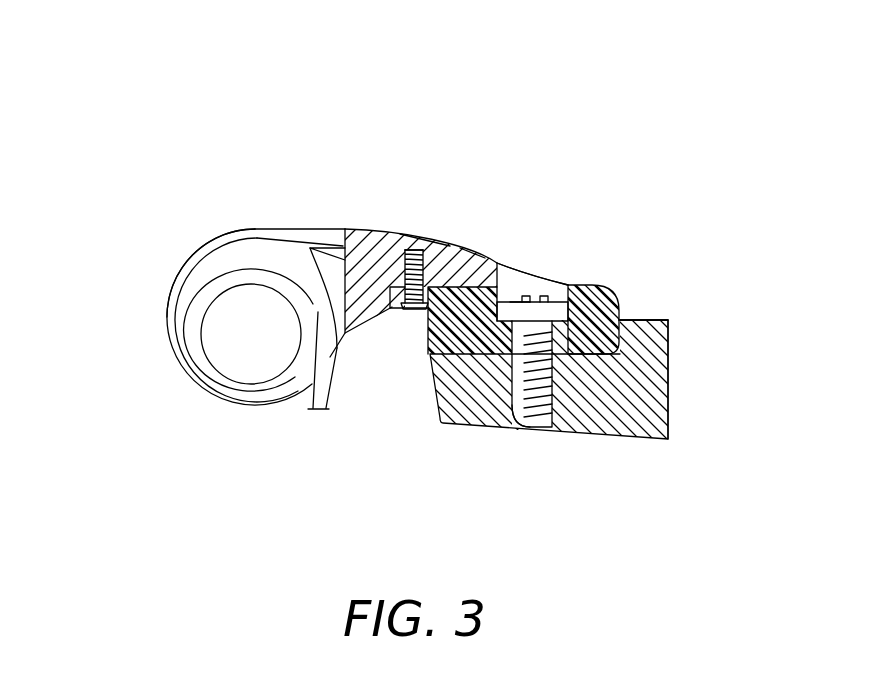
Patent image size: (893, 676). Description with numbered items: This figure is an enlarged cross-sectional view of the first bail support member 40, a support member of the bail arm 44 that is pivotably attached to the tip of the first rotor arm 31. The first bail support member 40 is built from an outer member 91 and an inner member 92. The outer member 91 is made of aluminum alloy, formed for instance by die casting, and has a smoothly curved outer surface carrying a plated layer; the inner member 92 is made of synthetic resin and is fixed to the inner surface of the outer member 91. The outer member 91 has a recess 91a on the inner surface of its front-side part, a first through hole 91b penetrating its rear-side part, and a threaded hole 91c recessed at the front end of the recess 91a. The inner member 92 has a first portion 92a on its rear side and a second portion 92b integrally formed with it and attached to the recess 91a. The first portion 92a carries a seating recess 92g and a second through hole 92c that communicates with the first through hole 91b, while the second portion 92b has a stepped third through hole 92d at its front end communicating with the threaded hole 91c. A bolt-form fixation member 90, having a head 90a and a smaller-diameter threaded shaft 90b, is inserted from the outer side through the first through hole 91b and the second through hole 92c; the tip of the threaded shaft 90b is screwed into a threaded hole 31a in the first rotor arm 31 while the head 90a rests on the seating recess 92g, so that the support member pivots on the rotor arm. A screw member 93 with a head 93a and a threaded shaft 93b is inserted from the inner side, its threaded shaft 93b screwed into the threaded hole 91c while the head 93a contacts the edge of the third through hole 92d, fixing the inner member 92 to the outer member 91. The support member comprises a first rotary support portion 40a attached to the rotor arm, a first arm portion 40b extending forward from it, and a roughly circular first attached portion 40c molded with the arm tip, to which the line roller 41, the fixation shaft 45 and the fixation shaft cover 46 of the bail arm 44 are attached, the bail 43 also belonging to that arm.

The first rotor arm 31 is at (650, 397).
The threaded hole 31a is at (522, 428).
The first bail support member 40 is at (318, 143).
The first rotary support portion 40a is at (585, 295).
The first arm portion 40b is at (376, 238).
The first attached portion 40c is at (253, 238).
The line roller 41 is at (174, 268).
The bail 43 is at (314, 399).
The bail arm 44 is at (154, 394).
The fixation shaft 45 is at (237, 330).
The fixation shaft cover 46 is at (200, 277).
The fixation member 90 is at (620, 322).
The head 90a is at (566, 284).
The threaded shaft 90b is at (543, 415).
The outer member 91 is at (436, 243).
The recess 91a is at (473, 252).
The first through hole 91b is at (518, 300).
The threaded hole 91c is at (418, 249).
The inner member 92 is at (485, 365).
The first portion 92a is at (580, 347).
The second portion 92b is at (458, 346).
The second through hole 92c is at (541, 300).
The third through hole 92d is at (400, 312).
The seating recess 92g is at (578, 282).
The screw member 93 is at (417, 307).
The head 93a is at (400, 309).
The threaded shaft 93b is at (405, 249).